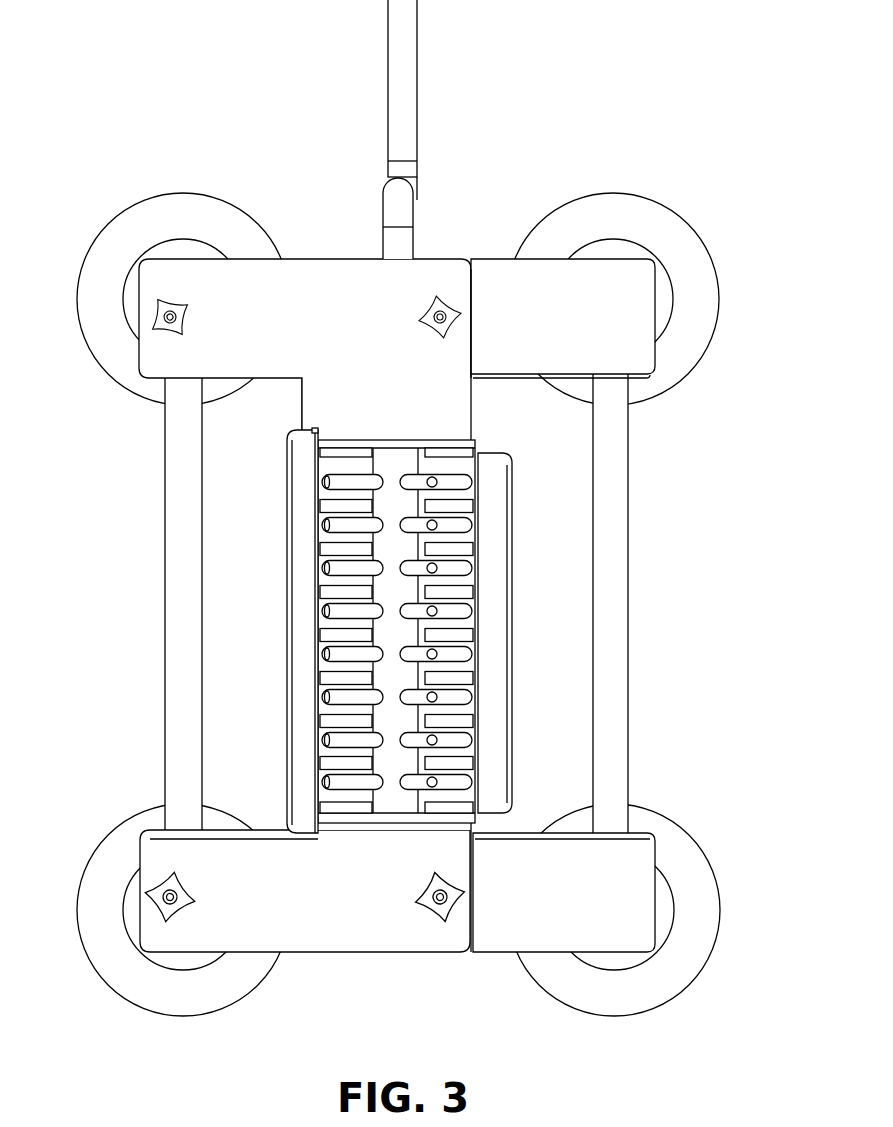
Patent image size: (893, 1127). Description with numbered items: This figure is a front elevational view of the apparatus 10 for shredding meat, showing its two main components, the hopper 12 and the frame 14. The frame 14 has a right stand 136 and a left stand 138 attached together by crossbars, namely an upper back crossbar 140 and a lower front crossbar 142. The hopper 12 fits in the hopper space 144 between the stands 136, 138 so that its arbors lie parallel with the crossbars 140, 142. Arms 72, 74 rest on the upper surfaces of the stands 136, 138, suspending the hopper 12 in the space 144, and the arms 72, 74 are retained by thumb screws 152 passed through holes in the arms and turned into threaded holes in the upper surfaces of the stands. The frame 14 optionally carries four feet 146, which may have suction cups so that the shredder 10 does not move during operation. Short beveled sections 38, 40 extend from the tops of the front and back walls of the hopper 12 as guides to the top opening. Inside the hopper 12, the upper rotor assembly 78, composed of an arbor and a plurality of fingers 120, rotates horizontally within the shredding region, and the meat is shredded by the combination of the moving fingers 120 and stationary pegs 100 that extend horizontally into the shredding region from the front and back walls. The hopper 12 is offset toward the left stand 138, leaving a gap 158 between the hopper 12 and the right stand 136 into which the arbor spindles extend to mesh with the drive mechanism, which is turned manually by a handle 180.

The apparatus for shredding meat 10 is at (197, 79).
The hopper 12 is at (474, 416).
The frame 14 is at (492, 951).
The beveled section 38 is at (513, 523).
The beveled section 40 is at (290, 511).
The arm 72 is at (318, 286).
The arm 74 is at (348, 938).
The upper rotor assembly 78 is at (397, 680).
The stationary peg 100 is at (463, 636).
The finger 120 is at (330, 611).
The right stand 136 is at (495, 258).
The left stand 138 is at (522, 831).
The upper back crossbar 140 is at (165, 633).
The lower front crossbar 142 is at (630, 560).
The hopper space 144 is at (405, 631).
The foot 146 is at (112, 218).
The thumb screw 152 is at (192, 308).
The gap 158 is at (297, 406).
The handle 180 is at (417, 97).